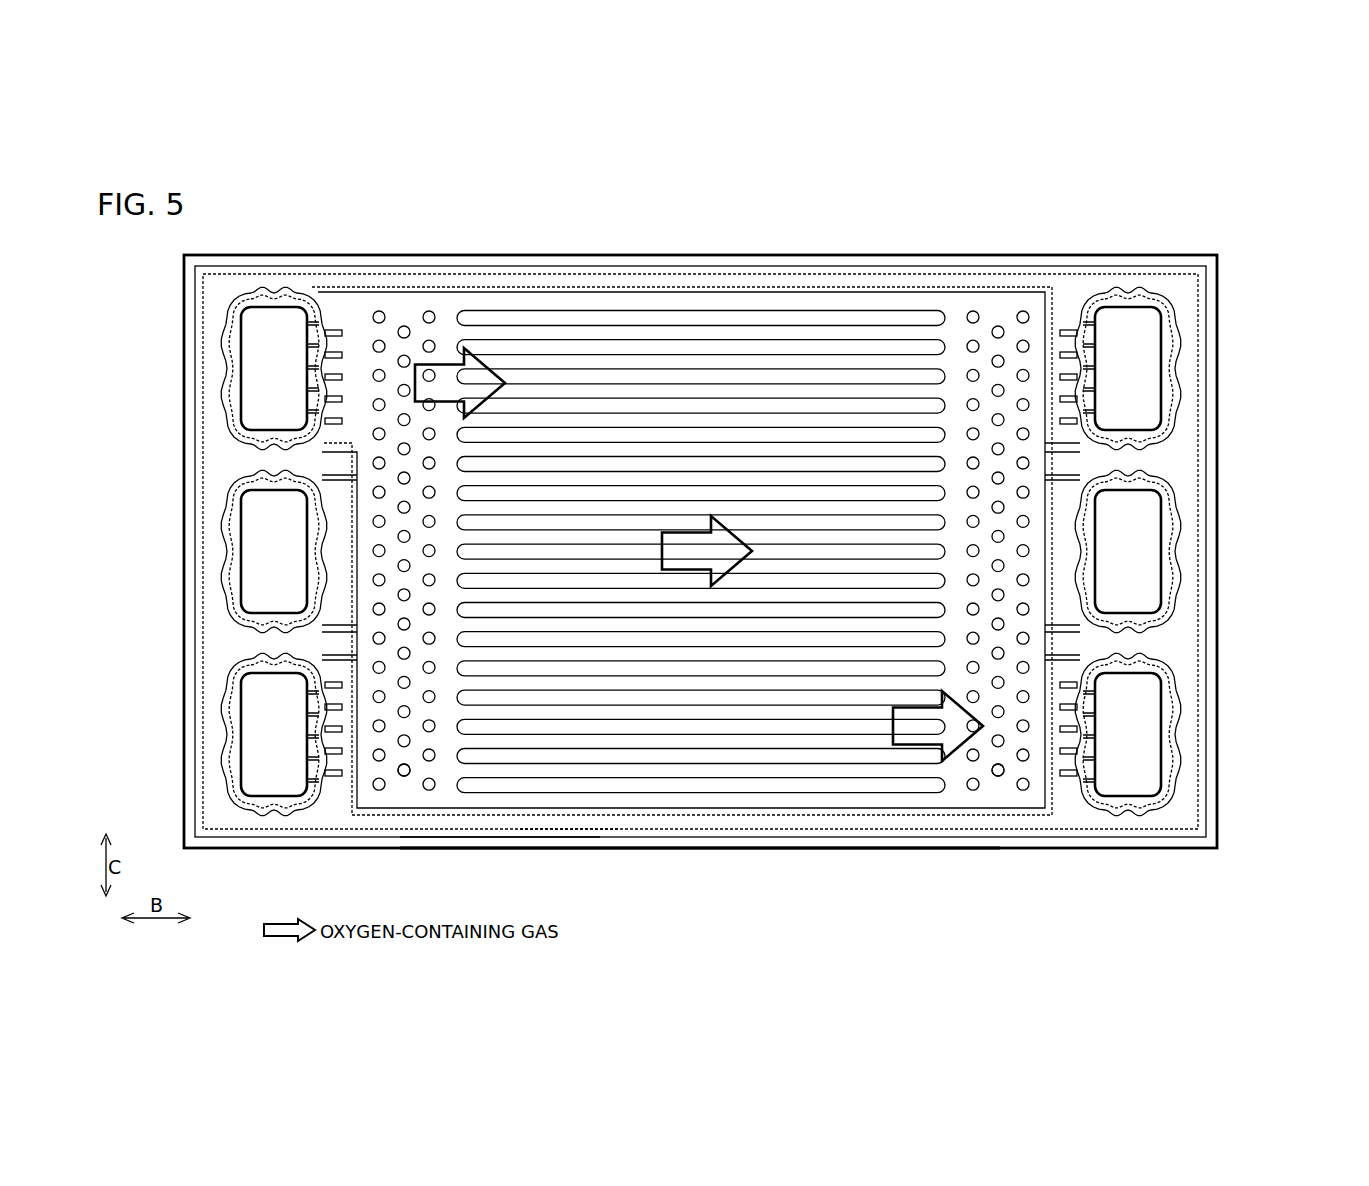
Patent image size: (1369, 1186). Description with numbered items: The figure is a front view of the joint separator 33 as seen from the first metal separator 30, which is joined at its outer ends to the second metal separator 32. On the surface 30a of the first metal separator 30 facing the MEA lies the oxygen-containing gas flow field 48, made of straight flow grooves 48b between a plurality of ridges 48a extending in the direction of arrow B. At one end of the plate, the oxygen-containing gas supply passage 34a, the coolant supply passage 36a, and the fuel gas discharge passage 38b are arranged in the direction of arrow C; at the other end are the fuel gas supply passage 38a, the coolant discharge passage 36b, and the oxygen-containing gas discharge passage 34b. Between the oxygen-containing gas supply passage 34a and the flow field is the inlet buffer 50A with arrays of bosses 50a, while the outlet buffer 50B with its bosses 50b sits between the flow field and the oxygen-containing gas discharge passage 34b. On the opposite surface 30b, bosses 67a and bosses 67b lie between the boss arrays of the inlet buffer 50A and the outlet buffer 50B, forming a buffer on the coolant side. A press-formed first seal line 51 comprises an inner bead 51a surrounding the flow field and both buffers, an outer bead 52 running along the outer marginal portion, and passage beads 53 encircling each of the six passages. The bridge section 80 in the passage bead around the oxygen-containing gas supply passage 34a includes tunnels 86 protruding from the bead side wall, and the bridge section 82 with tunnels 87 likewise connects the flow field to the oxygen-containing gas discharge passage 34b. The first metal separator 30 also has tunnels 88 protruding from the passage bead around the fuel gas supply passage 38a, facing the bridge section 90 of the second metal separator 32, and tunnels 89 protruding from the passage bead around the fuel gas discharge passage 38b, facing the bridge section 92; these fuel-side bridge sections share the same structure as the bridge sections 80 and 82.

The joint separator 33 is at (1227, 217).
The first metal separator 30 is at (762, 254).
The second metal separator 32 is at (812, 265).
The outer bead 52 is at (627, 830).
The first seal line 51 is at (727, 842).
The inner bead 51a is at (668, 812).
The surface 30a is at (481, 818).
The surface 30b is at (545, 820).
The oxygen-containing gas flow field 48 is at (701, 490).
The ridges 48a is at (626, 350).
The straight flow grooves 48b is at (690, 333).
The inlet buffer 50A is at (411, 491).
The bosses 50a is at (383, 506).
The outlet buffer 50B is at (986, 491).
The bosses 50b is at (959, 506).
The oxygen-containing gas supply passage 34a is at (258, 400).
The coolant supply passage 36a is at (252, 573).
The fuel gas discharge passage 38b is at (258, 695).
The fuel gas supply passage 38a is at (1140, 353).
The coolant discharge passage 36b is at (1145, 527).
The oxygen-containing gas discharge passage 34b is at (1145, 705).
The passage beads 53 is at (225, 425).
The bridge section 80 is at (297, 354).
The tunnels 86 is at (333, 328).
The bridge section 90 is at (1067, 320).
The tunnels 88 is at (1087, 410).
The tunnels 89 is at (318, 752).
The bridge section 92 is at (306, 805).
The bridge section 82 is at (1105, 748).
The tunnels 87 is at (1085, 760).
The bosses 67a is at (404, 778).
The bosses 67b is at (998, 778).